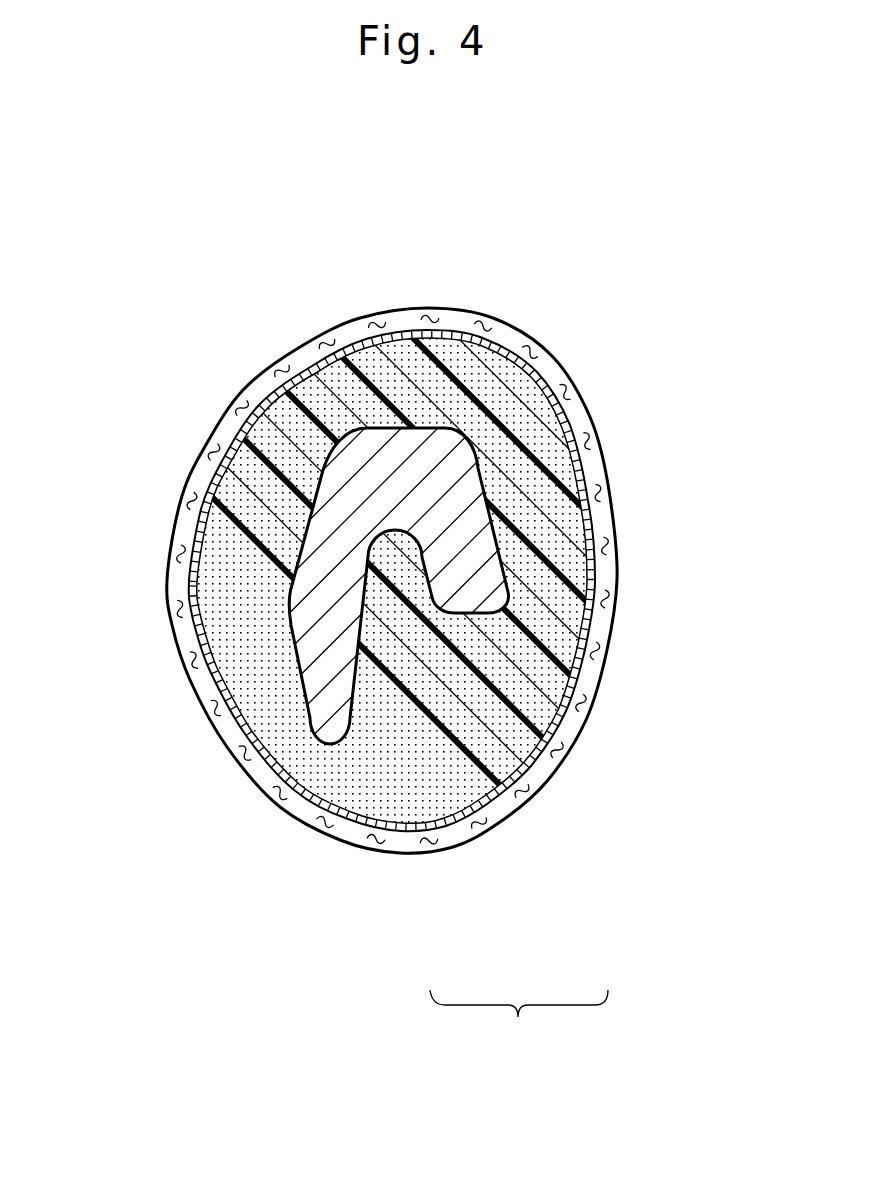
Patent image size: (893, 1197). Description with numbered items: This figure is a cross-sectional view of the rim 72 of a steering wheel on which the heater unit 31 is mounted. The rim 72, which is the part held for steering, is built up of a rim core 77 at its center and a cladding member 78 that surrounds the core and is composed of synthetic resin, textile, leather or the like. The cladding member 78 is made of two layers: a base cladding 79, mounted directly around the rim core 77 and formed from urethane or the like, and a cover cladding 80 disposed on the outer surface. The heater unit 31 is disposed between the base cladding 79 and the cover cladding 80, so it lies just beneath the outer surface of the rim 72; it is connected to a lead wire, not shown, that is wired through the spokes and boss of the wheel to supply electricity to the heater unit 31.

The rim 72 is at (206, 295).
The heater unit 31 is at (583, 460).
The rim core 77 is at (332, 730).
The cladding member 78 is at (519, 1025).
The base cladding 79 is at (447, 777).
The cover cladding 80 is at (537, 792).